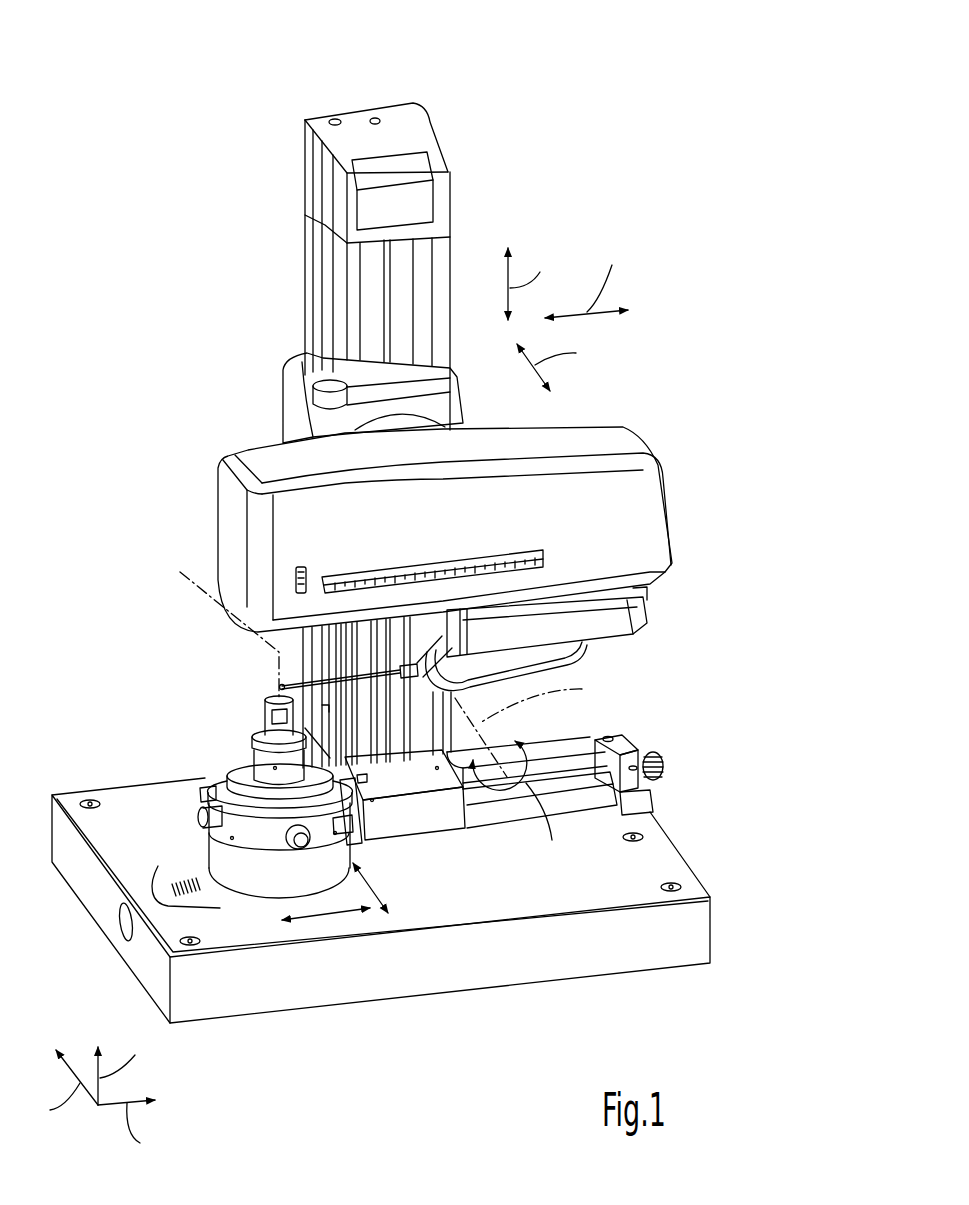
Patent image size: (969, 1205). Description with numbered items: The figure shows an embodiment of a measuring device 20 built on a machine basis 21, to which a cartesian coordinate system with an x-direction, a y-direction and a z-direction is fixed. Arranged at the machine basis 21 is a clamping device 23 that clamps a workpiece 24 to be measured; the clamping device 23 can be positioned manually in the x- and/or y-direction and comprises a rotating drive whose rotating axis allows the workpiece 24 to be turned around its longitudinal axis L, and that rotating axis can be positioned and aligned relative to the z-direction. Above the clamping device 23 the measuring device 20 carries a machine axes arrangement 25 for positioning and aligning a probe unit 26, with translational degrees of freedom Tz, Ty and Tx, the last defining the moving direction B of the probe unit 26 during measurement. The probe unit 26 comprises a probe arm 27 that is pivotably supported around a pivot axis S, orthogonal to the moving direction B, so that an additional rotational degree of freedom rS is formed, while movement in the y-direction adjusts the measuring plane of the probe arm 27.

The measuring device 20 is at (410, 586).
The machine basis 21 is at (495, 957).
The clamping device 23 is at (260, 762).
The workpiece 24 is at (273, 697).
The machine axes arrangement 25 is at (664, 405).
The probe unit 26 is at (537, 724).
The probe arm 27 is at (357, 678).